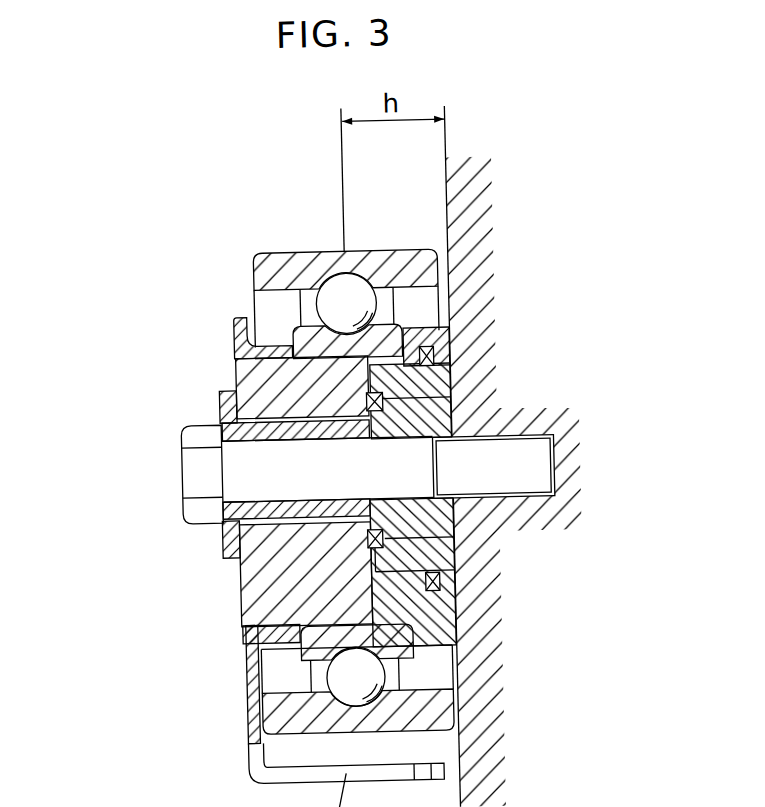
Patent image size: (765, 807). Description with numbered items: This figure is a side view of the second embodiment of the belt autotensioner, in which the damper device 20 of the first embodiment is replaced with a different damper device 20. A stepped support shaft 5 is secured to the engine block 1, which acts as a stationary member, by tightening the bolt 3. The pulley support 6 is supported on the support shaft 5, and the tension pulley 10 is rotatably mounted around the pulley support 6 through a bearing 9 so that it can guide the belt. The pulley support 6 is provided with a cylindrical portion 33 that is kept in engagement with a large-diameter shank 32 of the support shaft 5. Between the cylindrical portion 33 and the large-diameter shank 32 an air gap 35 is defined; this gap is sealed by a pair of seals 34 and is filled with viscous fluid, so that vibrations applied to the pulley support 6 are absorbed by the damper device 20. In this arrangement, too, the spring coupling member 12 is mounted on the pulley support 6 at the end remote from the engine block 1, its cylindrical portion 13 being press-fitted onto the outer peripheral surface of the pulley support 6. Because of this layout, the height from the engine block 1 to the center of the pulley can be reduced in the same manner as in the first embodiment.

The engine block 1 is at (475, 215).
The bolt 3 is at (240, 465).
The support shaft 5 is at (262, 429).
The pulley support 6 is at (280, 580).
The bearing 9 is at (345, 260).
The tension pulley 10 is at (281, 261).
The spring coupling member 12 is at (246, 677).
The cylindrical portion 13 is at (270, 629).
The damper device 20 is at (425, 279).
The large-diameter shank 32 is at (420, 386).
The cylindrical portion 33 is at (427, 620).
The seals 34 is at (435, 352).
The air gap 35 is at (425, 573).